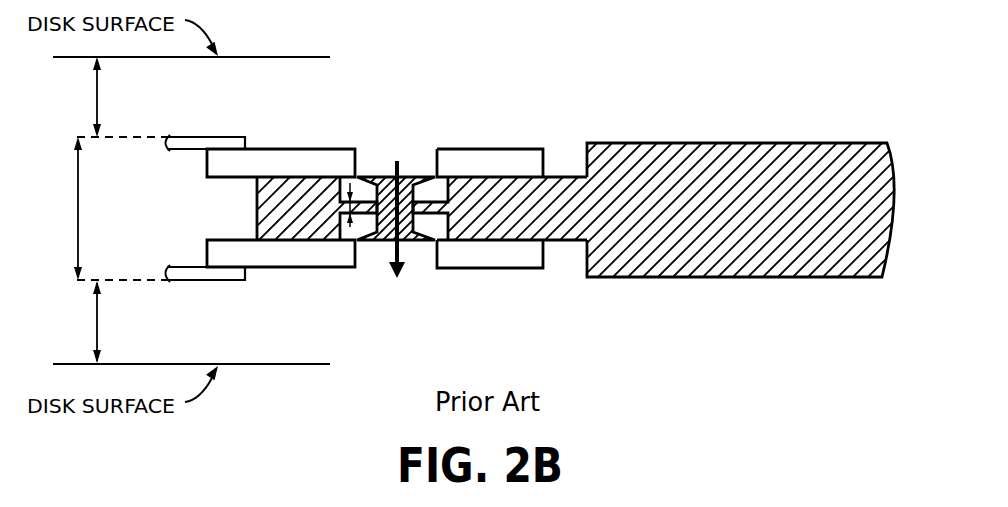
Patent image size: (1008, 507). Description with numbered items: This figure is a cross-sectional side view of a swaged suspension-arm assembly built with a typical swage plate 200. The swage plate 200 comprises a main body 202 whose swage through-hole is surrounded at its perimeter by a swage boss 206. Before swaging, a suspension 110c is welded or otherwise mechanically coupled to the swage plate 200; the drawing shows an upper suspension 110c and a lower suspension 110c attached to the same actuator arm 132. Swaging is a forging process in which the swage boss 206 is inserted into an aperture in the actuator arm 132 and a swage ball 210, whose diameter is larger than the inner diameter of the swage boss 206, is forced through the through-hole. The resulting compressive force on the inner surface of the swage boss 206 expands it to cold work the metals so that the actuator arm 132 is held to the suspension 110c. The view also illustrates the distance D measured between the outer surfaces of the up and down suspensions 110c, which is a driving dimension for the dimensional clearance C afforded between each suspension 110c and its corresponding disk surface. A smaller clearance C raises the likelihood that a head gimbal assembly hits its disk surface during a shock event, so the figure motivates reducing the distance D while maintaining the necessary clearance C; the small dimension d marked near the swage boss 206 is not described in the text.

The suspension 110c is at (204, 143).
The actuator arm 132 is at (785, 158).
The swage plate 200 is at (507, 138).
The main body 202 is at (307, 162).
The swage boss 206 is at (434, 177).
The swage ball 210 is at (412, 144).
The dimensional clearance C is at (89, 210).
The distance D is at (110, 208).
The neck thickness d is at (344, 223).